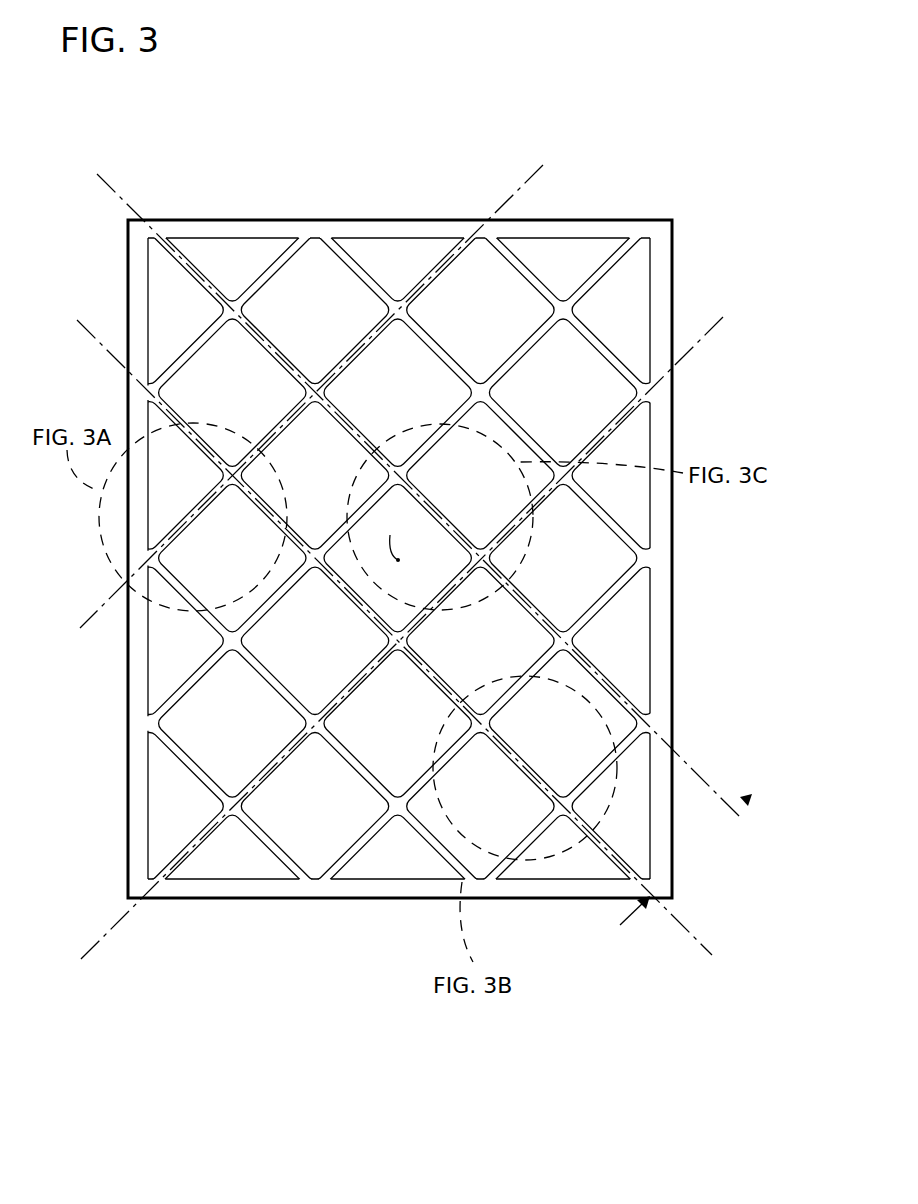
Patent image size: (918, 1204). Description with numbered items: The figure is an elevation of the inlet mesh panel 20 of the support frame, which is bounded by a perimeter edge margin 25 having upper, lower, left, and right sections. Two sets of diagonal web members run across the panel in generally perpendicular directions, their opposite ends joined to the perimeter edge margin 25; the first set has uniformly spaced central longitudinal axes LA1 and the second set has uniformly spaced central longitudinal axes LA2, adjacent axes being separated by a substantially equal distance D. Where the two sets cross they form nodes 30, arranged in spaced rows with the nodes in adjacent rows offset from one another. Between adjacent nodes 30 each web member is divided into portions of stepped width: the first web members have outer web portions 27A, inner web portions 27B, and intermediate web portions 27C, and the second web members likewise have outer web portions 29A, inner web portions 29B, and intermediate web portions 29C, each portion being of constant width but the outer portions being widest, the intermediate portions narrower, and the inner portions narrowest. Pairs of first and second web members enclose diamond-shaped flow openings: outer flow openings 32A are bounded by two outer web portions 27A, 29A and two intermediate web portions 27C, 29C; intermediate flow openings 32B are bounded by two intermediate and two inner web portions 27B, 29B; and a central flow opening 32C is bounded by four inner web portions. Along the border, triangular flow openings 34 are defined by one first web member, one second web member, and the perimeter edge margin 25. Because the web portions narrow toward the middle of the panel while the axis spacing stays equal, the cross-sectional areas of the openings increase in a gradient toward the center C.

The inlet mesh panel 20 is at (660, 166).
The perimeter edge margin 25 is at (391, 221).
The outer web portion 27A is at (391, 563).
The inner web portion 27B is at (401, 533).
The intermediate web portion 27C is at (424, 544).
The outer web portion 29A is at (406, 579).
The inner web portion 29B is at (395, 550).
The intermediate web portion 29C is at (391, 552).
The node 30 is at (420, 537).
The outer flow opening 32A is at (398, 558).
The intermediate flow opening 32B is at (397, 558).
The central flow opening 32C is at (397, 557).
The flow opening 34 is at (398, 558).
The central longitudinal axis LA1 is at (390, 562).
The central longitudinal axis LA2 is at (413, 572).
The center C is at (392, 536).
The distance D is at (626, 922).